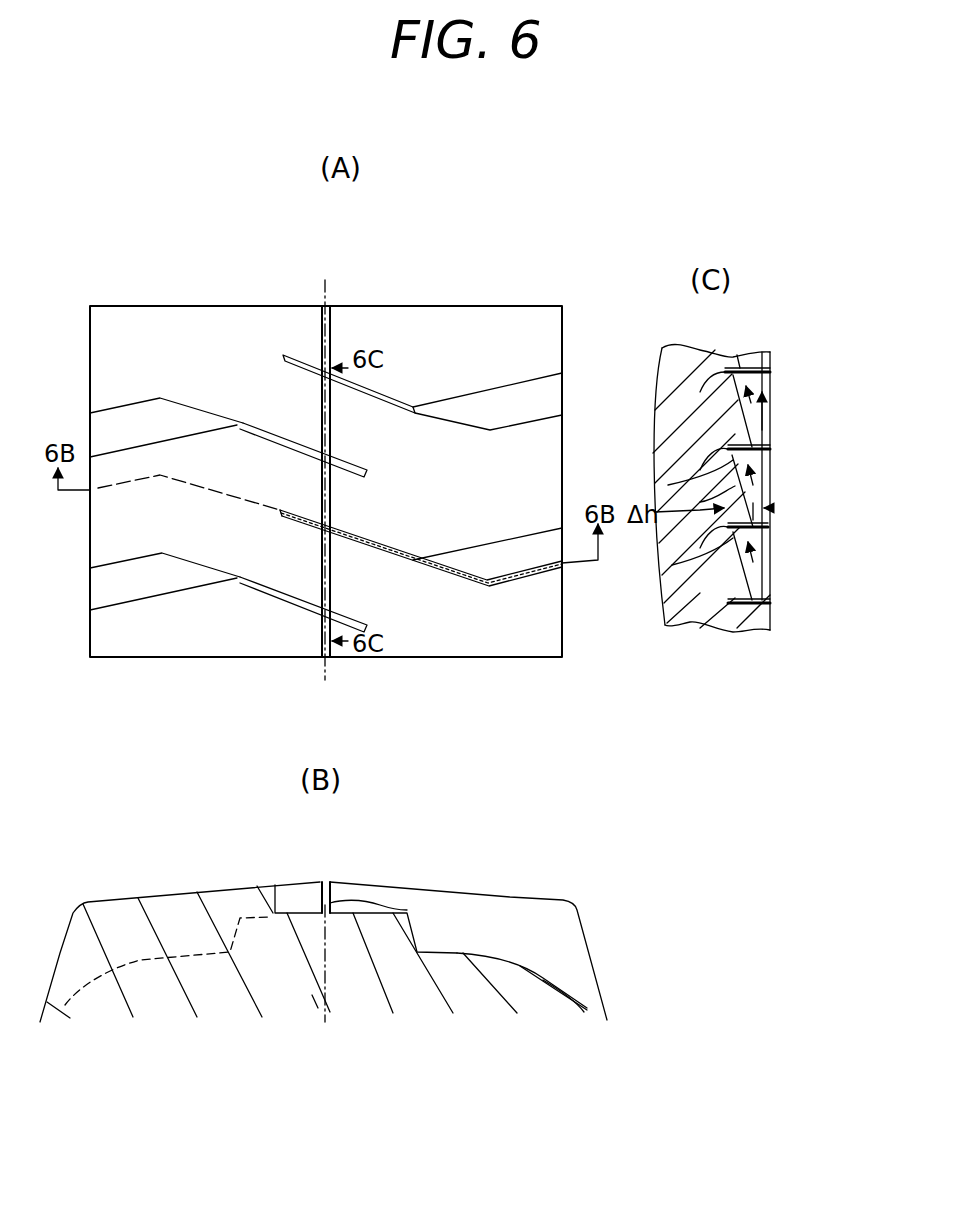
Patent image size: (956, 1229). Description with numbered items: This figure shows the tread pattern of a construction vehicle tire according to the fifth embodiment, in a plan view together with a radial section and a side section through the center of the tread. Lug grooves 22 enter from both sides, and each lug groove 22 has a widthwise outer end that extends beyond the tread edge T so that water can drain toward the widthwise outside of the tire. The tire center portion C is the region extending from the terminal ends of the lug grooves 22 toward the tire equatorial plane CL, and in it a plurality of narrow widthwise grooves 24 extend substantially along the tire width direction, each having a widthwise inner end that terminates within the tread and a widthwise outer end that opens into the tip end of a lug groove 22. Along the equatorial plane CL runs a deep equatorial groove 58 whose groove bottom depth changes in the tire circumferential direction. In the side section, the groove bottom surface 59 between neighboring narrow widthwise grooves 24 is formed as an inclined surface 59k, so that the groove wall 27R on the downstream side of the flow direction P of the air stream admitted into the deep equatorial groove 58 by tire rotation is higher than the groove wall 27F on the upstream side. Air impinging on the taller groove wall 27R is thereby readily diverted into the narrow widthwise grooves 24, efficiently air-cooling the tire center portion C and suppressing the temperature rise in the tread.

The lug groove 22 is at (94, 422).
The narrow widthwise groove 24 is at (415, 405).
The deep equatorial groove 58 is at (332, 306).
The groove bottom surface 59 is at (417, 915).
The inclined surface 59k is at (760, 430).
The groove wall on upstream side 27F is at (668, 485).
The groove wall on downstream side 27R is at (760, 452).
The flow direction of air stream P is at (763, 420).
The tread edge T is at (90, 325).
The tire center portion C is at (275, 270).
The tire equatorial plane CL is at (325, 280).